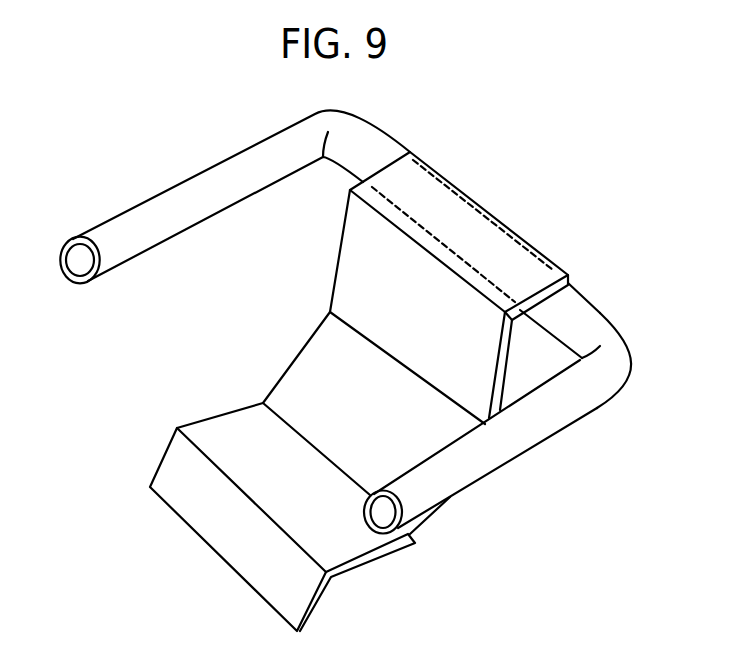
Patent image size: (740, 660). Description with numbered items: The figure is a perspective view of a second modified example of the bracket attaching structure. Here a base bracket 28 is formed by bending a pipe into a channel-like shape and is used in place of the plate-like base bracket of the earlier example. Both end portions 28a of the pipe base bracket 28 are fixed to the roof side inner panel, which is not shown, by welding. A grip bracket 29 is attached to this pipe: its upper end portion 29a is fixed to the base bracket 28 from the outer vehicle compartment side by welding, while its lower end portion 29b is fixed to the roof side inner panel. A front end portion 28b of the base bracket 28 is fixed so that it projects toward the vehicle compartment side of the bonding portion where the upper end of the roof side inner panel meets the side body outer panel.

The base bracket 28 is at (528, 210).
The end portions 28a is at (66, 242).
The front end portion 28b is at (582, 317).
The grip bracket 29 is at (302, 375).
The upper end portion 29a is at (433, 197).
The lower end portion 29b is at (223, 535).